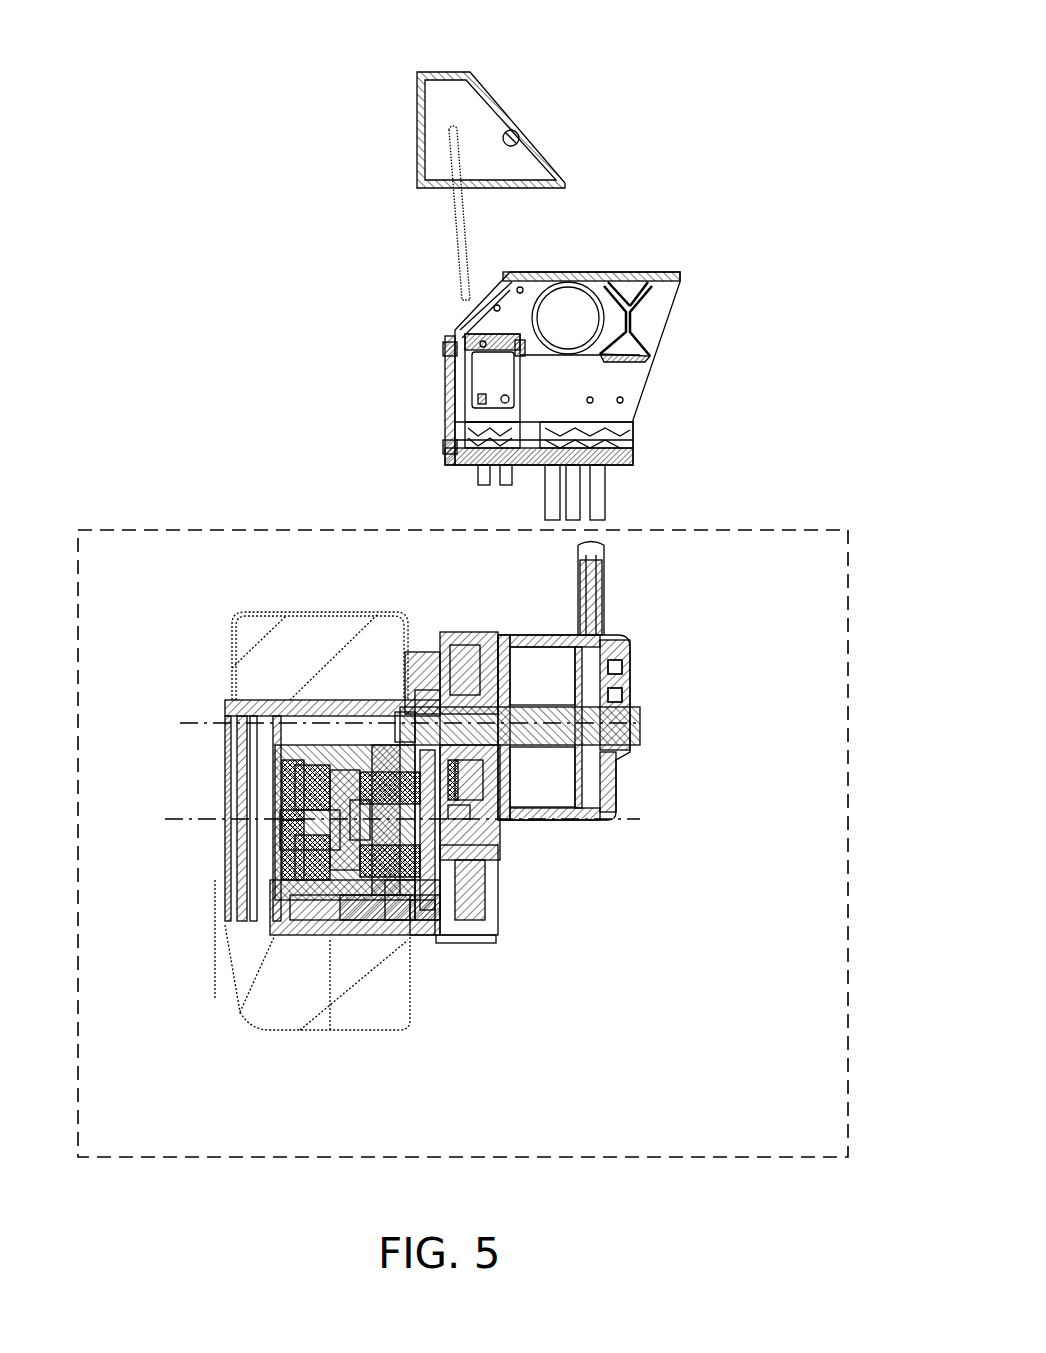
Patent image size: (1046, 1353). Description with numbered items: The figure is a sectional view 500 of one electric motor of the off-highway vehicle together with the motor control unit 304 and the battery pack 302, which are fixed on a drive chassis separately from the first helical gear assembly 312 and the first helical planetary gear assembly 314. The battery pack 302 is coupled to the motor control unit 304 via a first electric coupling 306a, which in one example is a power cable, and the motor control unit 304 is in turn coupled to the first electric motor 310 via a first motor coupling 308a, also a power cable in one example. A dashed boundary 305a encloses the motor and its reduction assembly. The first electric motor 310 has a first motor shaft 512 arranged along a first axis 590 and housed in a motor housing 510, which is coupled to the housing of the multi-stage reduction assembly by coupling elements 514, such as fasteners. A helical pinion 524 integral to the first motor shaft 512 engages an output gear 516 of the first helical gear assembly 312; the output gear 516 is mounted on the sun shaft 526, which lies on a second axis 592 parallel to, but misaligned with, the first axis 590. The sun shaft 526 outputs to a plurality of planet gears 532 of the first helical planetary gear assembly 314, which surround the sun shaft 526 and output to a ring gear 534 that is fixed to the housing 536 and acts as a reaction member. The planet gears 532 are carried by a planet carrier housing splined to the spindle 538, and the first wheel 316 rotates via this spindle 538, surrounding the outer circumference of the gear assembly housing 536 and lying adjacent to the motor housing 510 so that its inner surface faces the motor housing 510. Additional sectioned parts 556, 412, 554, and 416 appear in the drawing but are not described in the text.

The sectional view 500 is at (690, 28).
The battery pack 302 is at (424, 102).
The first electric coupling 306a is at (458, 230).
The motor control unit 304 is at (458, 372).
The first motor coupling 308a is at (545, 497).
The actuator assembly 305a is at (136, 530).
The spindle 538 is at (302, 745).
The planet gears 532 is at (382, 760).
The coupling elements 514 is at (430, 690).
The flange 556 is at (412, 652).
The bearing 412 is at (462, 640).
The first motor shaft 512 is at (527, 705).
The first wheel 316 is at (232, 660).
The cover 554 is at (236, 672).
The first axis 590 is at (640, 722).
The second axis 592 is at (185, 818).
The helical pinion 524 is at (455, 812).
The first electric motor 310 is at (614, 820).
The motor housing 510 is at (472, 858).
The output gear 516 is at (444, 880).
The housing 536 is at (372, 855).
The sun shaft 526 is at (385, 830).
The first helical planetary gear assembly 314 is at (352, 915).
The ring gear 534 is at (402, 895).
The bearing 416 is at (412, 920).
The first helical gear assembly 312 is at (450, 942).